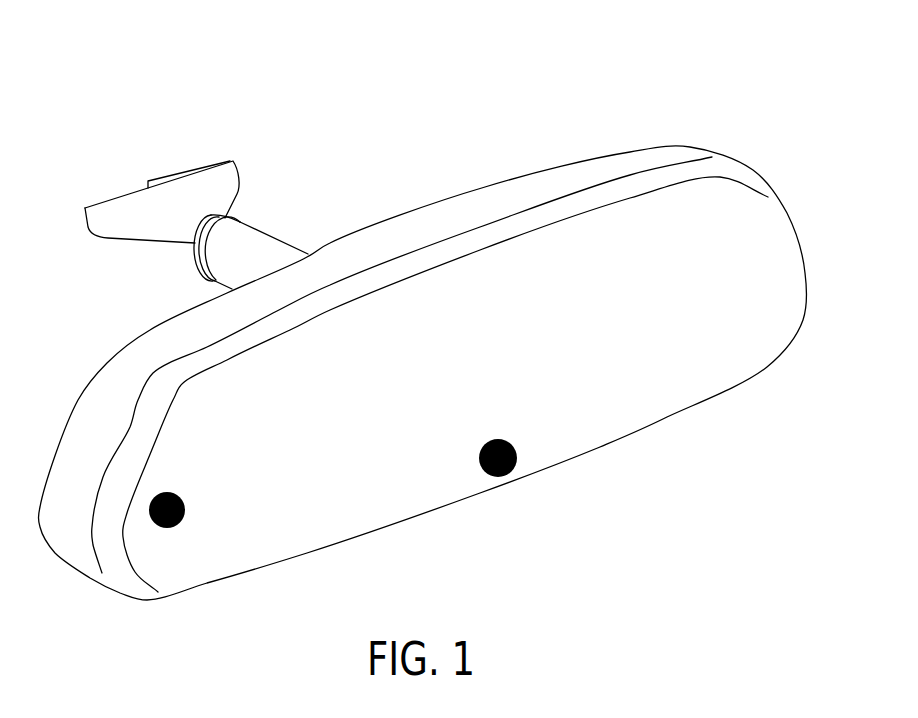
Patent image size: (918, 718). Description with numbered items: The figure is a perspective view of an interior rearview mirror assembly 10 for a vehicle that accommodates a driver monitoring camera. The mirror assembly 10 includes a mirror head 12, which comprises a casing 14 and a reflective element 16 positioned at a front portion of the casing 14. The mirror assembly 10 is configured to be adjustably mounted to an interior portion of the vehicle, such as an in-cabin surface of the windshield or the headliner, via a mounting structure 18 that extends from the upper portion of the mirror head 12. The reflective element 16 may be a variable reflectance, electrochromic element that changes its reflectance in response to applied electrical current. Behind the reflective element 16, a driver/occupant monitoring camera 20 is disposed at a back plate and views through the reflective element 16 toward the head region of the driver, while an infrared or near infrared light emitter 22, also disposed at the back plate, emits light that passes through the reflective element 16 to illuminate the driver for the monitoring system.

The interior rearview mirror assembly 10 is at (423, 308).
The mirror head 12 is at (423, 340).
The casing 14 is at (490, 200).
The reflective element 16 is at (660, 408).
The mounting structure 18 is at (276, 217).
The driver/occupant monitoring camera 20 is at (502, 438).
The infrared light emitter 22 is at (185, 512).